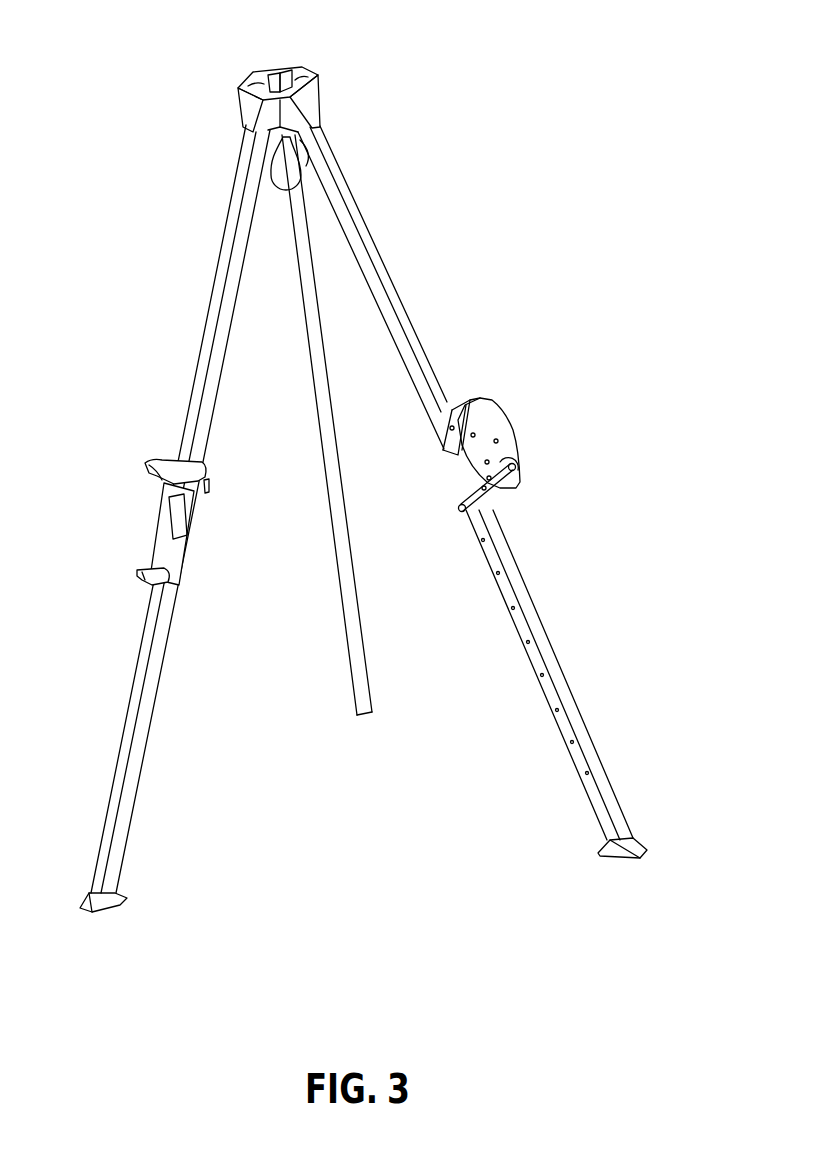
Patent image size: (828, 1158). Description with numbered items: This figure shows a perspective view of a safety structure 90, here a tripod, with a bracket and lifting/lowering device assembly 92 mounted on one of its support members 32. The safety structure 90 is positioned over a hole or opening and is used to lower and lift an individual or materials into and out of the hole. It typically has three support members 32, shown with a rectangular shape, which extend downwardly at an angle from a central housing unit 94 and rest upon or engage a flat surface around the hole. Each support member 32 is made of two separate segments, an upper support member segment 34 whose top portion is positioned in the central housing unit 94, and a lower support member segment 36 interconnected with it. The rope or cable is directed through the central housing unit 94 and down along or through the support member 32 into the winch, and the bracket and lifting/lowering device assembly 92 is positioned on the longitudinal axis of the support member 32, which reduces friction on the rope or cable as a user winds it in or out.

The safety structure 90 is at (441, 259).
The central housing unit 94 is at (310, 68).
The support member 32 is at (569, 782).
The upper support member segment 34 is at (418, 360).
The bracket and lifting/lowering device assembly 92 is at (518, 424).
The lower support member segment 36 is at (545, 648).